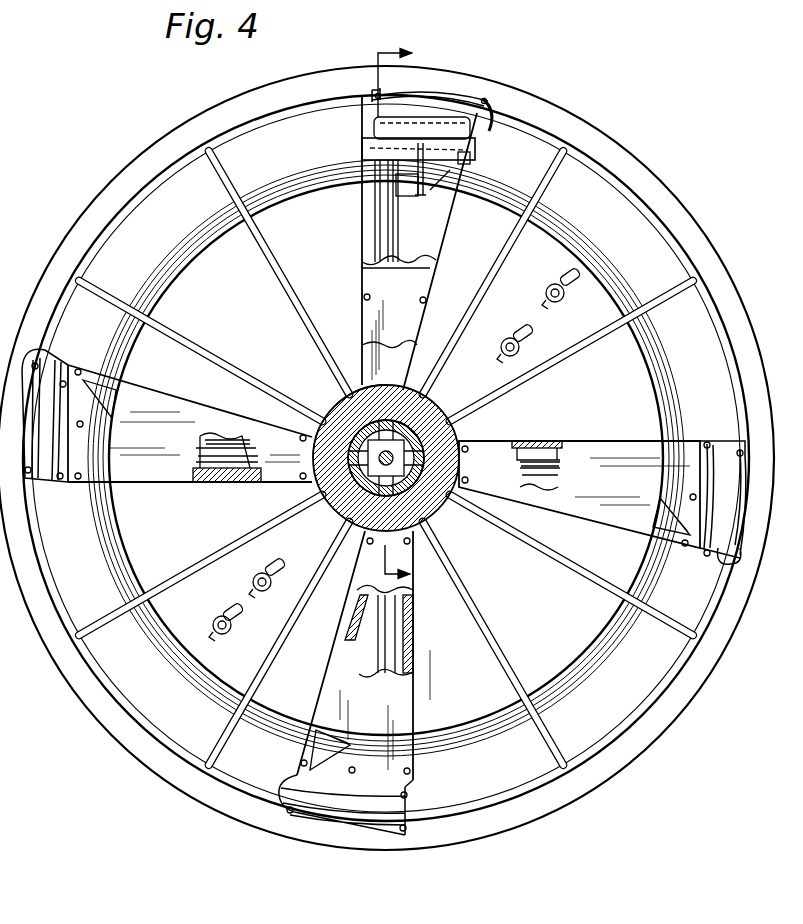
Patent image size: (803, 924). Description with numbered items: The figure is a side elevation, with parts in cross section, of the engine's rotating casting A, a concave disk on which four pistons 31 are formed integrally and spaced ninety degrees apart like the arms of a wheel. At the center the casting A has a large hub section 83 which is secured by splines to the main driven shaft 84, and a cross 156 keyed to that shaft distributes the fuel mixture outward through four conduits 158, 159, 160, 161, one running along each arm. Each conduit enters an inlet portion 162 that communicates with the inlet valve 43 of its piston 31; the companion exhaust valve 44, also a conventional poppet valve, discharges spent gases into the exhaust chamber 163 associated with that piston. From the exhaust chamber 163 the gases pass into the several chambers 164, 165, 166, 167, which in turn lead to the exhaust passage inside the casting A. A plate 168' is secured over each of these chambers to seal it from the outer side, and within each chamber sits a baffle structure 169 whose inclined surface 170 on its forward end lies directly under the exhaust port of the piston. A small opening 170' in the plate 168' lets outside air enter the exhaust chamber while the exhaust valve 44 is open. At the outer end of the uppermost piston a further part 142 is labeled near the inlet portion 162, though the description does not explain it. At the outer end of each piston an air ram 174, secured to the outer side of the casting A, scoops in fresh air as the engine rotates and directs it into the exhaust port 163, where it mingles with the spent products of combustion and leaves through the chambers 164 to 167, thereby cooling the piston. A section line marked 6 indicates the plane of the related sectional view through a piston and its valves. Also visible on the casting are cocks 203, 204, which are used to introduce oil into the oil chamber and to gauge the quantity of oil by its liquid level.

The casting A is at (644, 182).
The section line 6- 6 is at (405, 315).
The piston 31 is at (488, 121).
The inlet valve 43 is at (375, 204).
The exhaust valve 44 is at (388, 226).
The hub section 83 is at (442, 506).
The main driven shaft 84 is at (420, 408).
The plate 142 is at (378, 128).
The cross 156 is at (347, 516).
The conduit 158 is at (408, 220).
The conduit 159 is at (536, 440).
The conduit 160 is at (410, 620).
The conduit 161 is at (240, 430).
The inlet portion 162 is at (365, 149).
The exhaust chamber 163 is at (471, 162).
The chamber 164 is at (238, 470).
The chamber 165 is at (352, 638).
The chamber 166 is at (553, 448).
The chamber 167 is at (428, 262).
The plate 168' is at (389, 438).
The baffle structure 169 is at (455, 214).
The inclined surface 170 is at (424, 182).
The small opening 170' is at (233, 597).
The air ram 174 is at (483, 102).
The cock 203 is at (548, 289).
The cock 204 is at (524, 323).